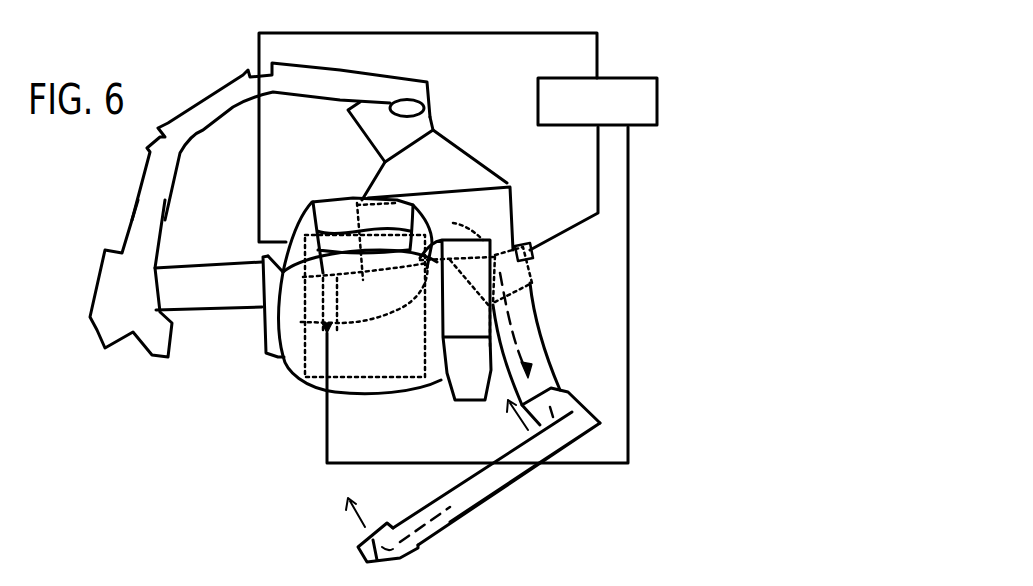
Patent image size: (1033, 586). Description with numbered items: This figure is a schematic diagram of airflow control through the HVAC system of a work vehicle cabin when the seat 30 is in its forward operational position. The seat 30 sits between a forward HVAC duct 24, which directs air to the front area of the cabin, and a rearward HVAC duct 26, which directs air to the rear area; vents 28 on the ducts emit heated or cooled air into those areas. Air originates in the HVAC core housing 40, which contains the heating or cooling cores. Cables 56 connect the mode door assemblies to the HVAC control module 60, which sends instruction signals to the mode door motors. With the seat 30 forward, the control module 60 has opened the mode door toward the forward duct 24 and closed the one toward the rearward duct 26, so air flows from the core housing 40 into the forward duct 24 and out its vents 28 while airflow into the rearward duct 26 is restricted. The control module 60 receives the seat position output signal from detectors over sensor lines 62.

The forward HVAC duct 24 is at (490, 497).
The rearward HVAC duct 26 is at (208, 132).
The vents 28 is at (377, 521).
The seat 30 is at (277, 370).
The HVAC core housing 40 is at (513, 213).
The cables 56 is at (572, 232).
The HVAC control module 60 is at (632, 76).
The sensor lines 62 is at (436, 34).